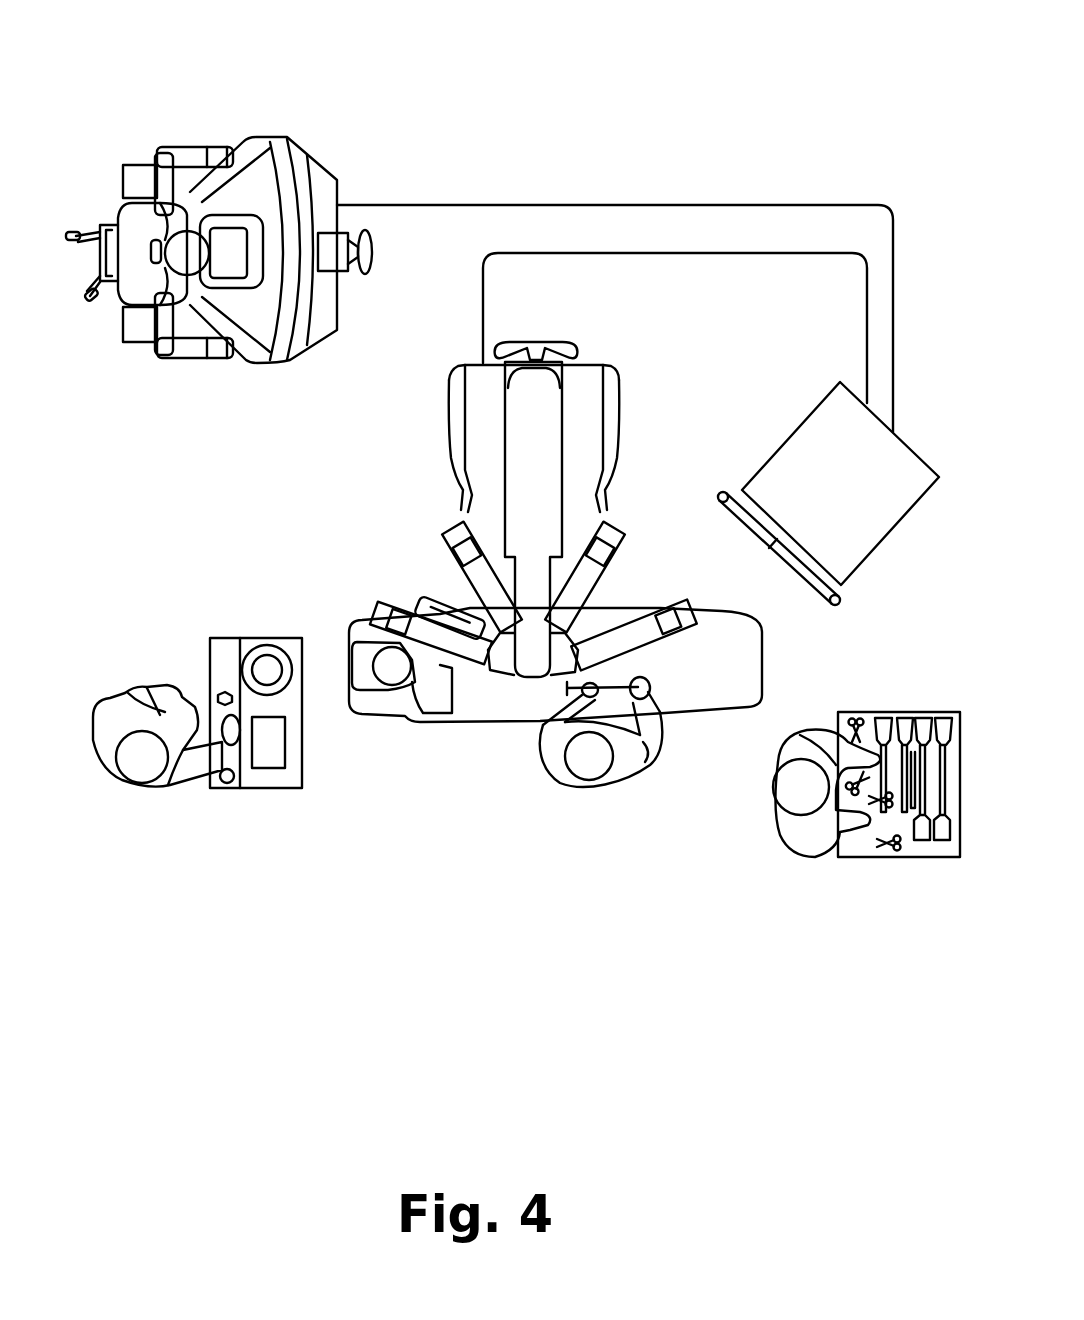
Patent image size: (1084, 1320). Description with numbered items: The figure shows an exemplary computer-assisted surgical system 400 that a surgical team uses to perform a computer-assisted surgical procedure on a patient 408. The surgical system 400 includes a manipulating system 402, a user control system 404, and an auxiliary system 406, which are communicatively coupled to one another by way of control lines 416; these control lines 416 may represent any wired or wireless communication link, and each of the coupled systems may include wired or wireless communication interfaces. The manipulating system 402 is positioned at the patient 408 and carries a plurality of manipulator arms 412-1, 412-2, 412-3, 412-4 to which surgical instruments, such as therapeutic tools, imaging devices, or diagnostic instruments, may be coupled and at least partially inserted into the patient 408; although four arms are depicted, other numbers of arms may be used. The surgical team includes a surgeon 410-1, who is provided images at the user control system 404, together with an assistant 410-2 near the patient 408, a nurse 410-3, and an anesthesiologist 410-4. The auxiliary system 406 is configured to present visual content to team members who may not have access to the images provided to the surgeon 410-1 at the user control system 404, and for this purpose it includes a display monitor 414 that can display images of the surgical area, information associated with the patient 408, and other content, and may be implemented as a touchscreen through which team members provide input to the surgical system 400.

The computer-assisted surgical system 400 is at (789, 44).
The manipulating system 402 is at (456, 383).
The user control system 404 is at (240, 150).
The auxiliary system 406 is at (800, 437).
The patient 408 is at (423, 693).
The surgeon 410-1 is at (125, 280).
The assistant 410-2 is at (550, 760).
The nurse 410-3 is at (783, 818).
The anesthesiologist 410-4 is at (157, 788).
The manipulator arm 412-1 is at (378, 608).
The manipulator arm 412-2 is at (448, 532).
The manipulator arm 412-3 is at (620, 531).
The manipulator arm 412-4 is at (690, 607).
The display monitor 414 is at (813, 593).
The control lines 416 is at (587, 204).